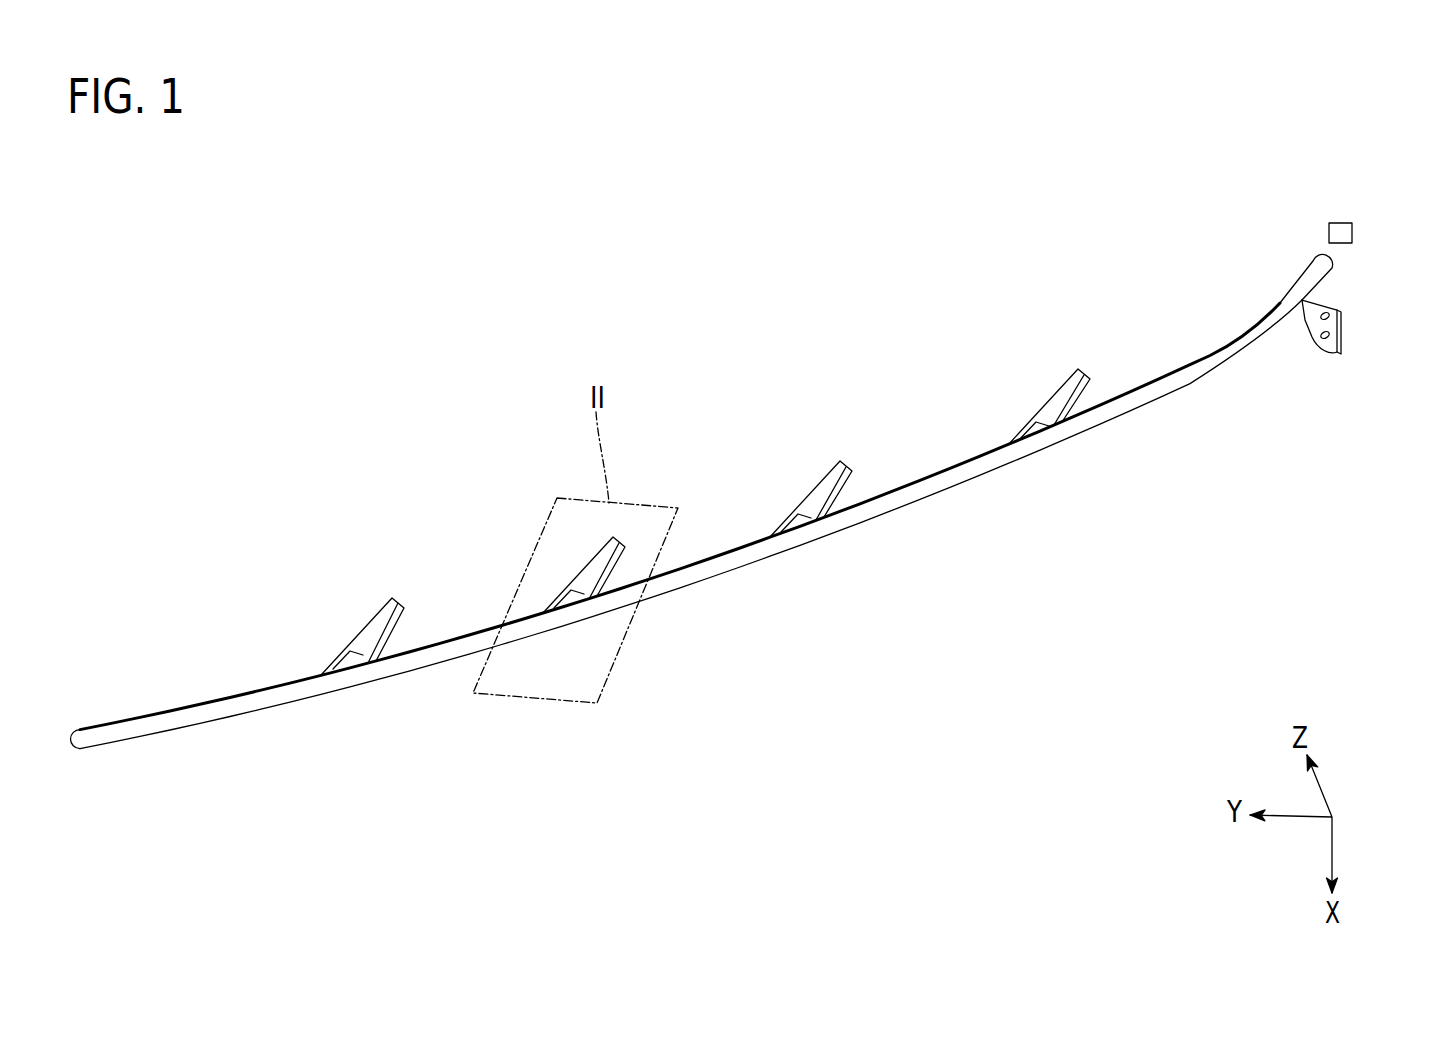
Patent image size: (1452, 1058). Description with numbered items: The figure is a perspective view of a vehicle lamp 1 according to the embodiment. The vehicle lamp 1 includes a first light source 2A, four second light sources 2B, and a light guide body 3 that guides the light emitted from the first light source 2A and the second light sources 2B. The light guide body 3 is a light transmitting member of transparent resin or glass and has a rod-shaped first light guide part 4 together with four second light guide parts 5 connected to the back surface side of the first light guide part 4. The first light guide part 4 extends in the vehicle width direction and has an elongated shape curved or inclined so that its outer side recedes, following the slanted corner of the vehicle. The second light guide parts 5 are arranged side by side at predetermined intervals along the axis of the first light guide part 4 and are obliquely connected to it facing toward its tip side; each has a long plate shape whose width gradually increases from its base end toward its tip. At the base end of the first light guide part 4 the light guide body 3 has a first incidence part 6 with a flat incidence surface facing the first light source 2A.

The vehicle lamp 1 is at (292, 289).
The first light source 2A is at (1342, 220).
The second light source 2B is at (400, 588).
The light guide body 3 is at (1088, 476).
The first light guide part 4 is at (940, 489).
The second light guide part 5 is at (357, 632).
The first incidence part 6 is at (1335, 258).